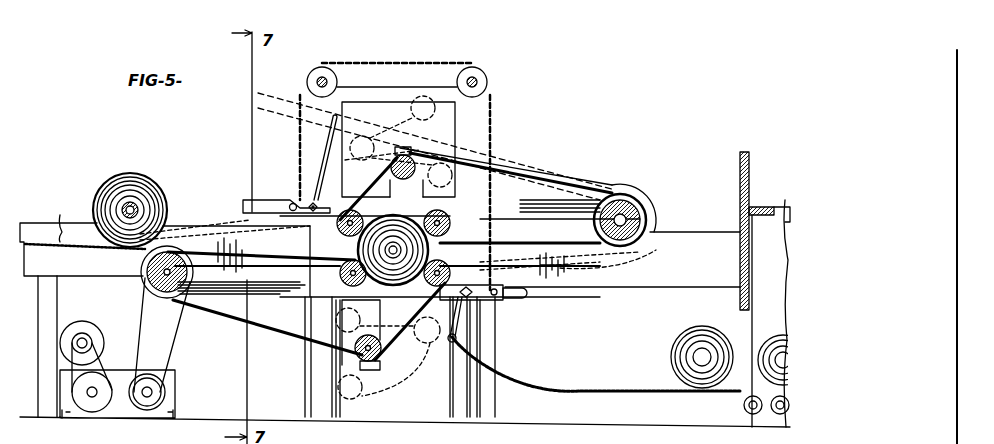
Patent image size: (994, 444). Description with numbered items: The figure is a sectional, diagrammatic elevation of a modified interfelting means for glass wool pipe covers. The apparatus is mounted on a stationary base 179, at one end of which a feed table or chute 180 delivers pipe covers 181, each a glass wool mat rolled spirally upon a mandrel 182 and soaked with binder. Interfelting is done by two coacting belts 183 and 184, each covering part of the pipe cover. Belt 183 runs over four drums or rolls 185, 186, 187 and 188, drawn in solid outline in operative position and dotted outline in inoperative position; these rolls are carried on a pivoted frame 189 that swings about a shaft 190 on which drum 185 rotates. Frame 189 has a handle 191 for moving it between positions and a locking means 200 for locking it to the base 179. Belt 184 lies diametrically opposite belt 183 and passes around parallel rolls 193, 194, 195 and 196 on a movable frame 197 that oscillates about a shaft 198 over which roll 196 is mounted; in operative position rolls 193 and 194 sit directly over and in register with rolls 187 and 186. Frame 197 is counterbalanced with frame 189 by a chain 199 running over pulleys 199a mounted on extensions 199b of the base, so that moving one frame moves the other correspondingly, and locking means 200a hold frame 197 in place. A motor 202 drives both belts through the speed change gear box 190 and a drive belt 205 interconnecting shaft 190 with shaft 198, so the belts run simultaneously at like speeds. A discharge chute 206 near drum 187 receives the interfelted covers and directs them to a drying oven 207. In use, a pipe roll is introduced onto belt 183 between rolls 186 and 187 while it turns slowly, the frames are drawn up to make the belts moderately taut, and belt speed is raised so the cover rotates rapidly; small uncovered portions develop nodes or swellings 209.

The stationary base 179 is at (57, 278).
The feed table or chute 180 is at (62, 220).
The pipe cover 181 is at (118, 184).
The mandrel 182 is at (138, 200).
The belt 183 is at (250, 244).
The belt 184 is at (540, 182).
The drum or roll 185 is at (148, 290).
The drum or roll 186 is at (387, 267).
The drum or roll 187 is at (395, 272).
The drum or roll 188 is at (380, 348).
The pivoted frame 189 is at (254, 294).
The shaft 190 is at (140, 266).
The handle 191 is at (262, 204).
The roll or drum 193 is at (453, 210).
The roll or drum 194 is at (365, 210).
The roll or drum 195 is at (419, 162).
The roll or drum 196 is at (648, 218).
The movable frame 197 is at (367, 189).
The shaft 198 is at (652, 244).
The chain 199 is at (414, 64).
The pulley 199a is at (322, 66).
The extension 199b is at (320, 117).
The locking means 200 is at (484, 300).
The locking means 200a is at (300, 190).
The motor 202 is at (104, 345).
The drive belt 205 is at (171, 344).
The discharge chute 206 is at (524, 380).
The drying oven 207 is at (772, 198).
The nodes or swellings 209 is at (341, 255).